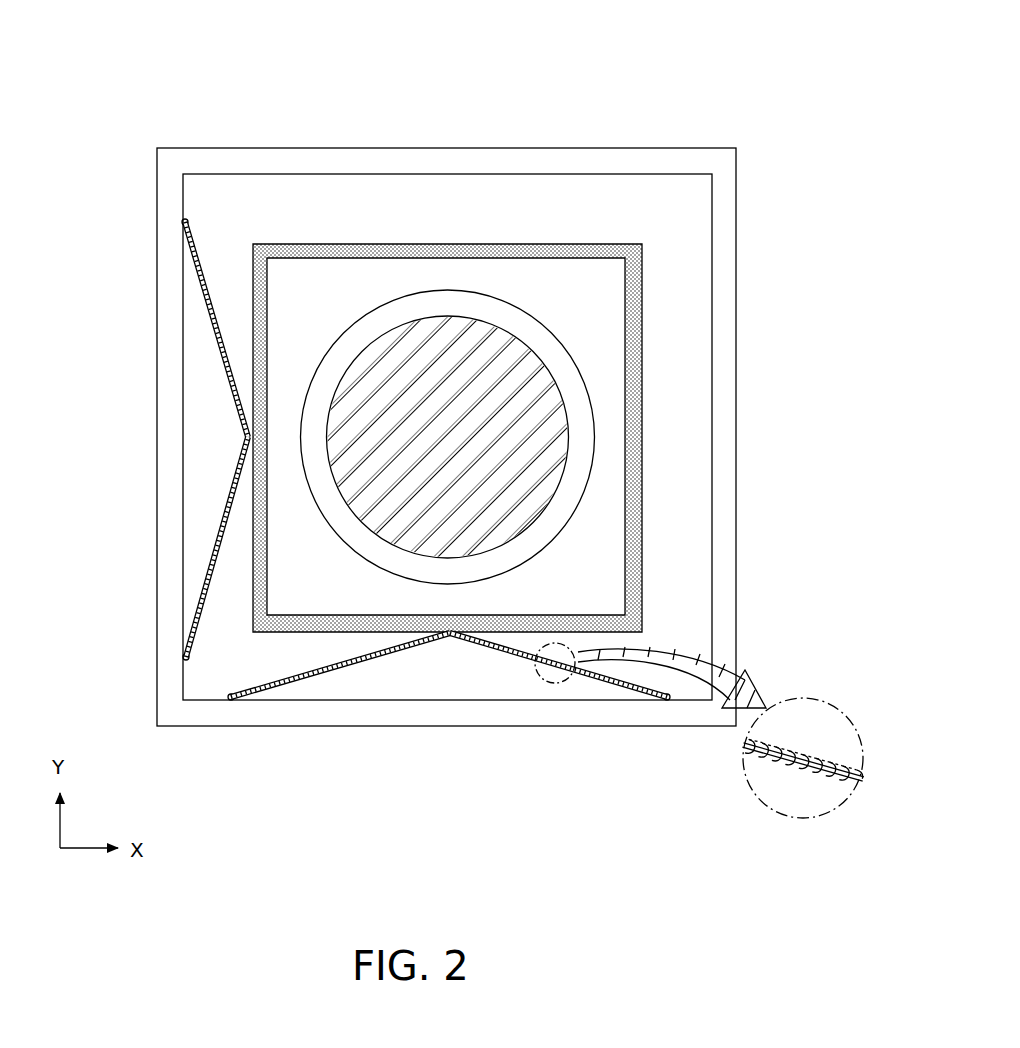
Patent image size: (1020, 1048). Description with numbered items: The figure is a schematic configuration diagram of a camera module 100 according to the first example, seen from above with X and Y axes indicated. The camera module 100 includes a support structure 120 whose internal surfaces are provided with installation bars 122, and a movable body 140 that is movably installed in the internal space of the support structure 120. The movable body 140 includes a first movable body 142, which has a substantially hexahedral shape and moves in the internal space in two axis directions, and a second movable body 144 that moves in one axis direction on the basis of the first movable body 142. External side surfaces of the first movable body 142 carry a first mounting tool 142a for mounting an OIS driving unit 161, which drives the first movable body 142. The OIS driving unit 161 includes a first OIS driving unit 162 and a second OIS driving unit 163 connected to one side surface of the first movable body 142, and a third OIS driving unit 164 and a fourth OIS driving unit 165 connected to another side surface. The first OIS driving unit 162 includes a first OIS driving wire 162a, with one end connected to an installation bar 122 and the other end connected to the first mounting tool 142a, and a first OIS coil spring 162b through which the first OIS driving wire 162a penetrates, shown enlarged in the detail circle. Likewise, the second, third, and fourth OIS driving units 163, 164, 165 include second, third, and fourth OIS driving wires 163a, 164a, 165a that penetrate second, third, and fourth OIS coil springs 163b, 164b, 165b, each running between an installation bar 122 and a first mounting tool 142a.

The camera module 100 is at (467, 33).
The support structure 120 is at (511, 160).
The installation bar 122 is at (185, 214).
The movable body 140 is at (805, 270).
The first movable body 142 is at (633, 350).
The first mounting tool 142a is at (248, 437).
The second movable body 144 is at (533, 331).
The OIS driving unit 161 is at (583, 872).
The first OIS driving unit 162 is at (510, 660).
The first OIS driving wire 162a is at (818, 770).
The first OIS coil spring 162b is at (784, 768).
The second OIS driving unit 163 is at (378, 660).
The second OIS driving wire 163a is at (342, 670).
The second OIS coil spring 163b is at (292, 686).
The third OIS driving unit 164 is at (200, 628).
The third OIS driving wire 164a is at (211, 566).
The third OIS coil spring 164b is at (219, 535).
The fourth OIS driving unit 165 is at (226, 366).
The fourth OIS driving wire 165a is at (203, 281).
The fourth OIS coil spring 165b is at (192, 249).